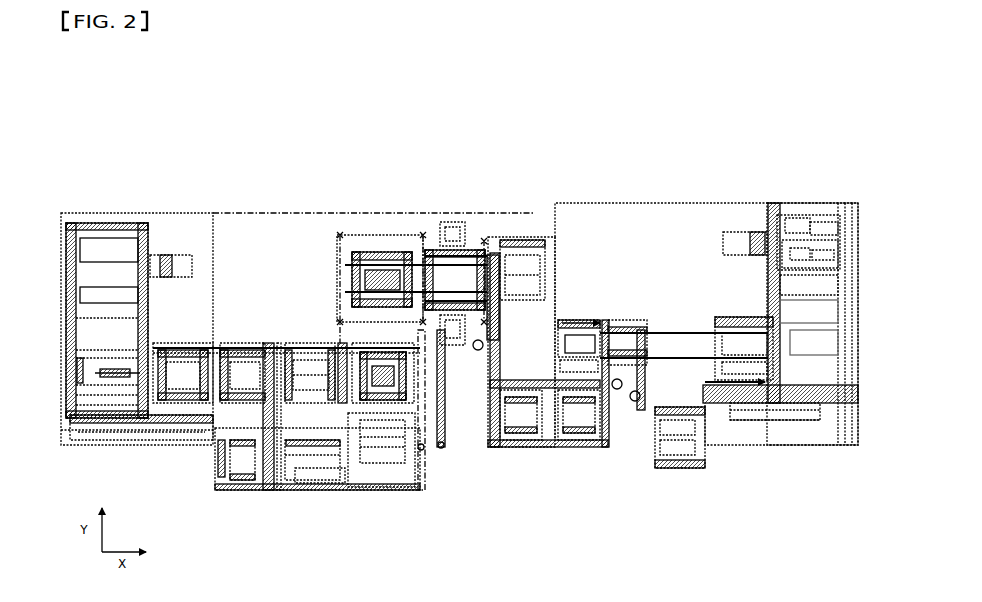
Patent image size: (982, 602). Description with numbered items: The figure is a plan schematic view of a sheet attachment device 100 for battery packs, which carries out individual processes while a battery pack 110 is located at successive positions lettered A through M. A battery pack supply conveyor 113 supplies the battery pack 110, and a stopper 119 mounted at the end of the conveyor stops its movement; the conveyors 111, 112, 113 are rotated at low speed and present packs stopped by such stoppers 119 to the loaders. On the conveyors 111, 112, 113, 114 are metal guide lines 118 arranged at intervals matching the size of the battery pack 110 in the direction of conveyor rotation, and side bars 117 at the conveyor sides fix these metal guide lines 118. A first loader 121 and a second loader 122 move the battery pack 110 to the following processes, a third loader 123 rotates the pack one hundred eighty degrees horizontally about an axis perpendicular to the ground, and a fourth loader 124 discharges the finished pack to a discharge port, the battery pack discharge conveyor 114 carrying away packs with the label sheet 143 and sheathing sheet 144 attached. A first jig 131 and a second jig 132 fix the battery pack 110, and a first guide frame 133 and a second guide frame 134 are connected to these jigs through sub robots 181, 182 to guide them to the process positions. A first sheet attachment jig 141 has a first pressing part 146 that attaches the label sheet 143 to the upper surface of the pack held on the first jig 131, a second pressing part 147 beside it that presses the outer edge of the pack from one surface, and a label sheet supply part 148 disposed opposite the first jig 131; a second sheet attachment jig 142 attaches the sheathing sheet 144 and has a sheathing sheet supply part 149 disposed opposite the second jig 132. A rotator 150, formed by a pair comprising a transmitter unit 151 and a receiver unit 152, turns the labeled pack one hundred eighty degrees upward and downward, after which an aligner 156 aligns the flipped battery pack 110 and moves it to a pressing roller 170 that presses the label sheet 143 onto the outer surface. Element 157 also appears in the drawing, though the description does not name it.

The sheet attachment device 100 is at (82, 105).
The battery pack 110 is at (308, 488).
The conveyor 111 is at (352, 246).
The conveyor 112 is at (574, 374).
The battery pack supply conveyor 113 is at (320, 507).
The battery pack discharge conveyor 114 is at (697, 470).
The side bar 117 is at (255, 449).
The metal guide line 118 is at (379, 478).
The stopper 119 is at (537, 233).
The first loader 121 is at (317, 516).
The second loader 122 is at (518, 456).
The third loader 123 is at (620, 411).
The fourth loader 124 is at (672, 466).
The first jig 131 is at (242, 346).
The second jig 132 is at (579, 306).
The first guide frame 133 is at (321, 293).
The second guide frame 134 is at (665, 320).
The first sheet attachment jig 141 is at (248, 184).
The second sheet attachment jig 142 is at (780, 468).
The label sheet 143 is at (110, 230).
The sheathing sheet 144 is at (770, 208).
The first pressing part 146 is at (193, 300).
The second pressing part 147 is at (293, 300).
The label sheet supply part 148 is at (95, 222).
The sheathing sheet supply part 149 is at (815, 213).
The rotator 150 is at (456, 528).
The transmitter unit 151 is at (421, 450).
The receiver unit 152 is at (441, 448).
The aligner 156 is at (373, 252).
The stopper 157 is at (598, 322).
The pressing roller 170 is at (485, 236).
The sub robot 181 is at (163, 425).
The sub robot 182 is at (730, 318).